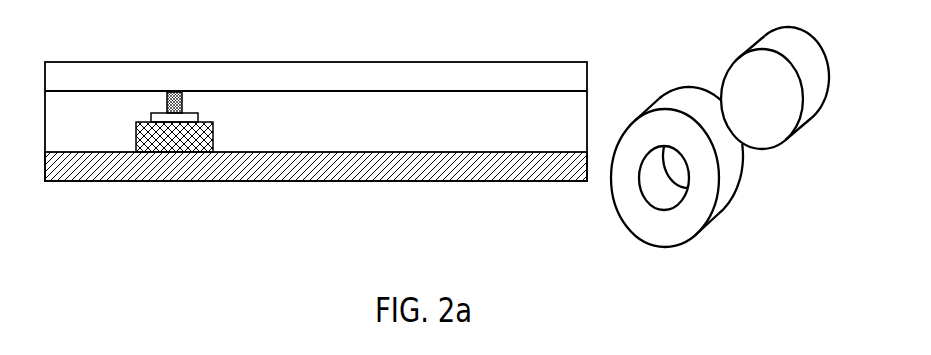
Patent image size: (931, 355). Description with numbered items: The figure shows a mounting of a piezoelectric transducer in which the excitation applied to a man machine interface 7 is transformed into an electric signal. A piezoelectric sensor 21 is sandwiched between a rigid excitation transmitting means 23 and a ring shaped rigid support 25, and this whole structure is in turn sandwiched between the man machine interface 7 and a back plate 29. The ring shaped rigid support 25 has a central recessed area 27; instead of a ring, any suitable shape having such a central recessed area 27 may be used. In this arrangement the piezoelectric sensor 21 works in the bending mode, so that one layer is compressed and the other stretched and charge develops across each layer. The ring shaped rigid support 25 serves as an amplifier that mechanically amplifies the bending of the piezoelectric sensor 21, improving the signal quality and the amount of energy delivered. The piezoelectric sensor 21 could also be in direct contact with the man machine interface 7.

The man machine interface 7 is at (557, 70).
The piezoelectric sensor 21 is at (195, 112).
The rigid excitation transmitting means 23 is at (158, 92).
The ring shaped rigid support 25 is at (213, 137).
The central recessed area 27 is at (653, 192).
The back plate 29 is at (116, 183).